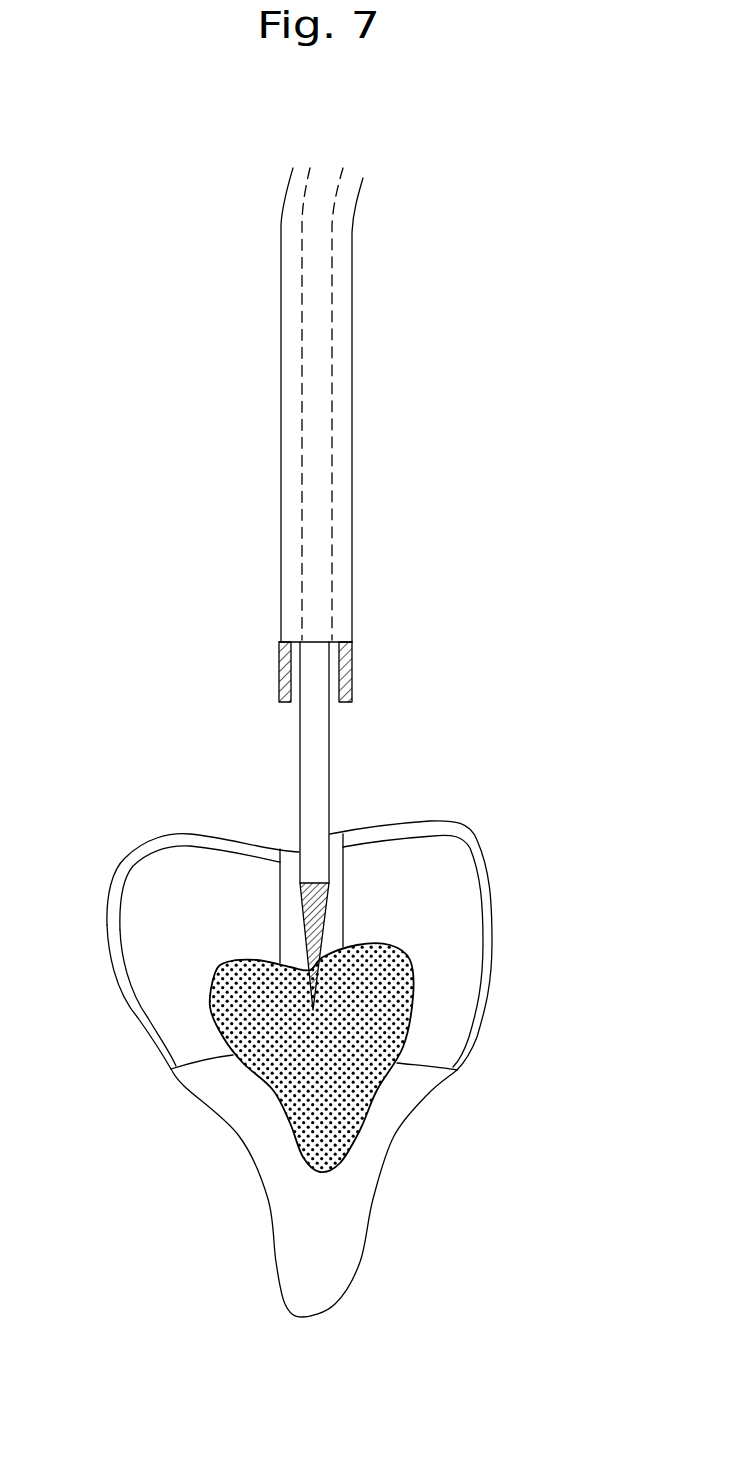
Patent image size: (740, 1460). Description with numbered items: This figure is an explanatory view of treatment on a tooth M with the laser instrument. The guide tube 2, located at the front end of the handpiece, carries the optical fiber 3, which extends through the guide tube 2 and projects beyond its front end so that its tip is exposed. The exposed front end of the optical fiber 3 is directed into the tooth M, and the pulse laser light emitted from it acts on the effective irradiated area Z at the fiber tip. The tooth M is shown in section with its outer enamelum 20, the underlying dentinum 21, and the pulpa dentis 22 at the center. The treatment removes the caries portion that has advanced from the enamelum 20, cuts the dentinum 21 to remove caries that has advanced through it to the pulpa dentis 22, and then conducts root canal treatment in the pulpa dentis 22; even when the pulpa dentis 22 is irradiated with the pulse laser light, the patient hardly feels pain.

The guide tube 2 is at (320, 293).
The optical fiber 3 is at (269, 826).
The effective irradiated area Z is at (300, 920).
The tooth M is at (342, 1008).
The enamelum 20 is at (487, 880).
The dentinum 21 is at (433, 932).
The pulpa dentis 22 is at (357, 1060).